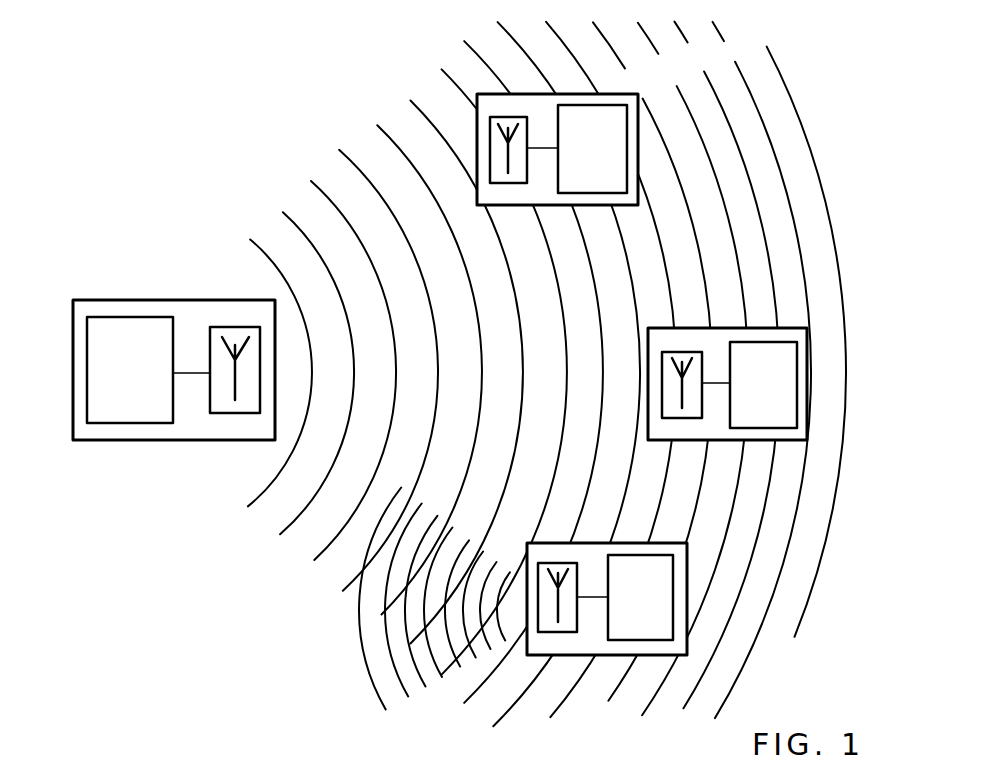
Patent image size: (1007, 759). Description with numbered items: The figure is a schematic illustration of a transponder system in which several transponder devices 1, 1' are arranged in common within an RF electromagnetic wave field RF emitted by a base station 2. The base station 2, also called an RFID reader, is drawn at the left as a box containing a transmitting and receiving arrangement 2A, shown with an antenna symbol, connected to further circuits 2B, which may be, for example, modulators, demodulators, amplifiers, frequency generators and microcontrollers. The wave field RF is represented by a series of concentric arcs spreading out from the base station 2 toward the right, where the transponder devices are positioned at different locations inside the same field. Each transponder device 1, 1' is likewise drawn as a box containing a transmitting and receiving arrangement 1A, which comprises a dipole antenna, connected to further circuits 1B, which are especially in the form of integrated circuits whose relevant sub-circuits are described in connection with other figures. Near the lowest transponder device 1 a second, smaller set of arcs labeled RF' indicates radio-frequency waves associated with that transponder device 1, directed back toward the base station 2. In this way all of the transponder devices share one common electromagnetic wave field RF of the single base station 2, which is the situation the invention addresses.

The transponder device 1 is at (598, 647).
The transmitting and receiving arrangement 1A is at (562, 632).
The further circuits 1B is at (634, 628).
The transponder device 1' is at (752, 321).
The base station 2 is at (168, 387).
The transmitting and receiving arrangement 2A is at (233, 326).
The further circuits 2B is at (133, 327).
The RF electromagnetic wave field RF is at (547, 374).
The response radio-frequency signal RF' is at (386, 599).